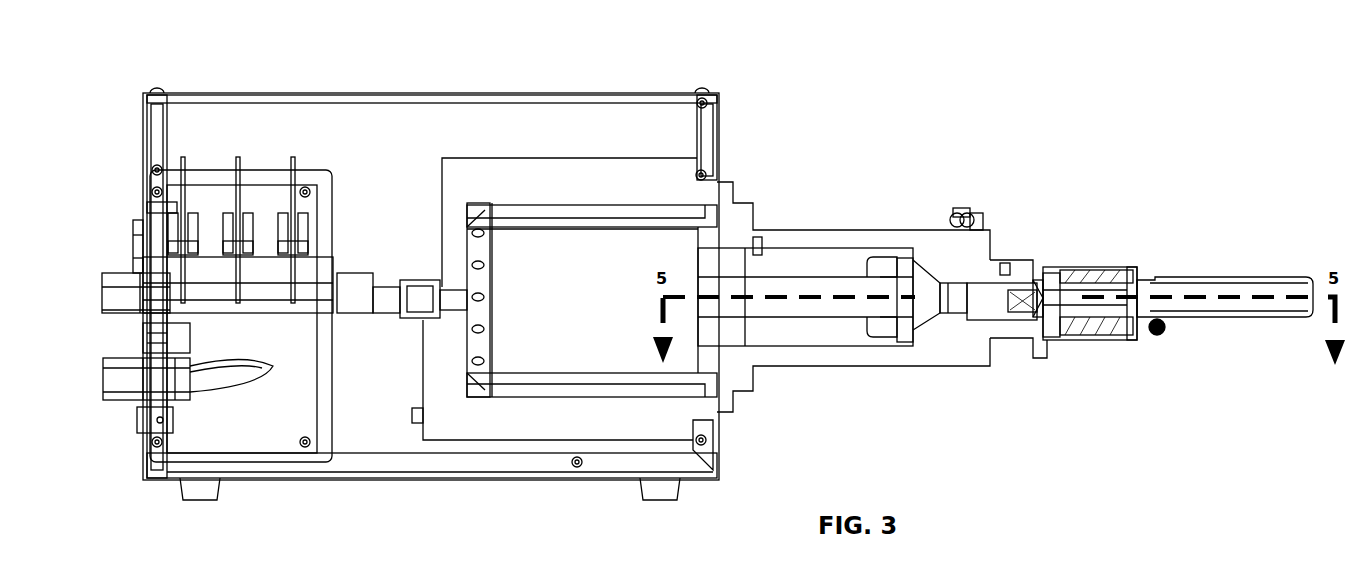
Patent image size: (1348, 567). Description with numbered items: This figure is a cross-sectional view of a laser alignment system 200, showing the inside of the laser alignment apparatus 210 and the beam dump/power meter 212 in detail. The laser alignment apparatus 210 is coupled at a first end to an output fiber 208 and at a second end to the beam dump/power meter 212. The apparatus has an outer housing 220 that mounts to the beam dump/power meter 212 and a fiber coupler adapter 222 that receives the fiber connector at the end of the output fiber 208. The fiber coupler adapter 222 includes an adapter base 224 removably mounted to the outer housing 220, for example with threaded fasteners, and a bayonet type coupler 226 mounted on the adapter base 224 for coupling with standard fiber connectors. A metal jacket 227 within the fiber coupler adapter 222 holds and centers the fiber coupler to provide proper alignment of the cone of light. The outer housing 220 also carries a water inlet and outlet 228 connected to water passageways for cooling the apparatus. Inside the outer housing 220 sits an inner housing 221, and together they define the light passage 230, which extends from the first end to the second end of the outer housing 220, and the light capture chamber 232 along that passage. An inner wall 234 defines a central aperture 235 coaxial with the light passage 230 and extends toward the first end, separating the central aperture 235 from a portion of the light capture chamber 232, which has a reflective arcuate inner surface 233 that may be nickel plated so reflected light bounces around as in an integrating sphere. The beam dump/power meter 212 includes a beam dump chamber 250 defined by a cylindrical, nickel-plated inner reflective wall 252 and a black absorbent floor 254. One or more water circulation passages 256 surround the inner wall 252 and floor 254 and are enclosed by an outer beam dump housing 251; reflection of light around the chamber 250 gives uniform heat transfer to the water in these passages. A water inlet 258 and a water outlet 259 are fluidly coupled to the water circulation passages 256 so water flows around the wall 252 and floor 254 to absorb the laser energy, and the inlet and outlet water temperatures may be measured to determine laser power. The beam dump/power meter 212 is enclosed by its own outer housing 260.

The laser alignment system 200 is at (1072, 137).
The output fiber 208 is at (1242, 262).
The laser alignment apparatus 210 is at (1005, 168).
The beam dump/power meter 212 is at (741, 96).
The outer housing 220 is at (812, 229).
The inner housing 221 is at (835, 265).
The fiber coupler adapter 222 is at (1099, 238).
The adapter base 224 is at (1018, 247).
The bayonet type coupler 226 is at (1107, 262).
The metal jacket 227 is at (1042, 310).
The water inlet and outlet 228 is at (955, 207).
The light passage 230 is at (947, 303).
The light capture chamber 232 is at (888, 265).
The reflective arcuate inner surface 233 is at (900, 268).
The inner wall 234 is at (887, 308).
The central aperture 235 is at (900, 310).
The beam dump chamber 250 is at (601, 303).
The outer beam dump housing 251 is at (500, 170).
The inner reflective wall 252 is at (540, 227).
The absorbent floor 254 is at (492, 343).
The water circulation passages 256 is at (600, 205).
The water inlet 258 is at (105, 280).
The water outlet 259 is at (110, 403).
The outer housing 260 is at (410, 96).